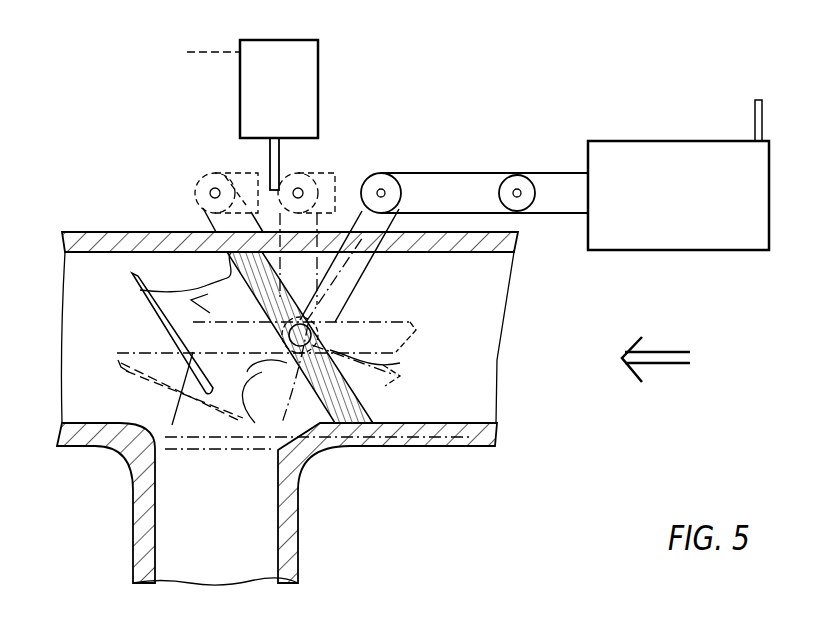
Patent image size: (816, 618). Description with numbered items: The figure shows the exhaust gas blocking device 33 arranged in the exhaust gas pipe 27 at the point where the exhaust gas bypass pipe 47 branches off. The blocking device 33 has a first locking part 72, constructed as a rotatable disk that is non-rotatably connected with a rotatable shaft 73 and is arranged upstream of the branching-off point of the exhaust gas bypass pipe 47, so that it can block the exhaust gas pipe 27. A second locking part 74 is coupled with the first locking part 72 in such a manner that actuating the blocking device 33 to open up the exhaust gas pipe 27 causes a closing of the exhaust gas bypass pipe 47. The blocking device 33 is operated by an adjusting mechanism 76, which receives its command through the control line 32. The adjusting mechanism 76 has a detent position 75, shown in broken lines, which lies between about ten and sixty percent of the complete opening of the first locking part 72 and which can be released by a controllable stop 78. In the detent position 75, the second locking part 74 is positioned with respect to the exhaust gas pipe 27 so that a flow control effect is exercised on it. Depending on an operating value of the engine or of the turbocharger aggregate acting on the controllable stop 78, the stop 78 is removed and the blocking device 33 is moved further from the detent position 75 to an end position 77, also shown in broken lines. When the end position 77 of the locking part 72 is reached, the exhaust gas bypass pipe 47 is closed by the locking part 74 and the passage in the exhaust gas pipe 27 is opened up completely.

The exhaust gas pipe 27 is at (72, 446).
The control line 32 is at (755, 110).
The exhaust gas blocking device 33 is at (365, 483).
The exhaust gas bypass pipe 47 is at (288, 543).
The first locking part 72 is at (383, 410).
The rotatable shaft 73 is at (317, 320).
The second locking part 74 is at (132, 288).
The detent position 75 is at (410, 373).
The adjusting mechanism 76 is at (418, 148).
The end position 77 is at (411, 331).
The controllable stop 78 is at (272, 155).